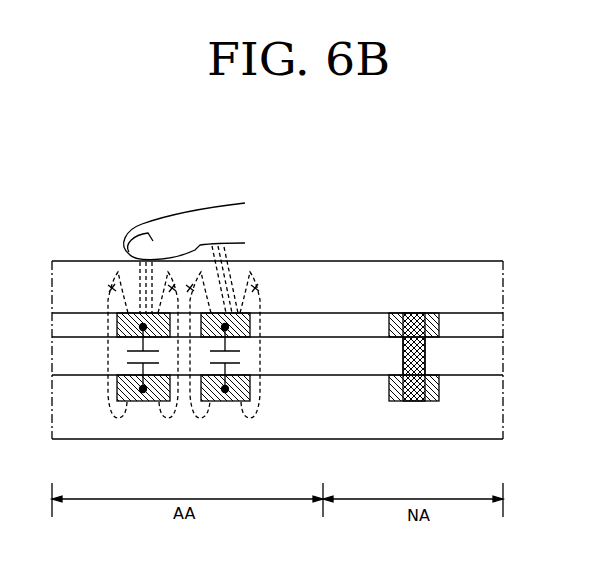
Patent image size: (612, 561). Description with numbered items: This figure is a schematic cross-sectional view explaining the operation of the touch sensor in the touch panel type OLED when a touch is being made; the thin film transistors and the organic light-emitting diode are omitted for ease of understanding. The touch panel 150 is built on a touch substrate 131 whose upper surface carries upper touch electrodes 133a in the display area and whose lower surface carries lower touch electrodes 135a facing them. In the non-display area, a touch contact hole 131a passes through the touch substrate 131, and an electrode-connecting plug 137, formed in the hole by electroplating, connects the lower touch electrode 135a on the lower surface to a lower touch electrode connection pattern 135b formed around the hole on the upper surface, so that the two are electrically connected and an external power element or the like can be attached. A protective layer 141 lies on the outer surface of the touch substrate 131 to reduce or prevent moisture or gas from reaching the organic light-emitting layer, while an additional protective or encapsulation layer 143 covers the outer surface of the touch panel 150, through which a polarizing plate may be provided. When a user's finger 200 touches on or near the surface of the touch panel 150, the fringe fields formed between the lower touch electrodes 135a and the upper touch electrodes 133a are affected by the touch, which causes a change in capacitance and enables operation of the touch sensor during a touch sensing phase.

The user's finger 200 is at (165, 231).
The touch panel 150 is at (345, 200).
The protective or encapsulation layer 143 is at (493, 288).
The protective layer 141 is at (493, 415).
The touch substrate 131 is at (493, 343).
The electrode-connecting plug 137 is at (427, 352).
The touch contact hole 131a is at (427, 361).
The lower touch electrode 135a is at (240, 402).
The upper touch electrode 133a is at (235, 333).
The lower touch electrode connection pattern 135b is at (431, 313).